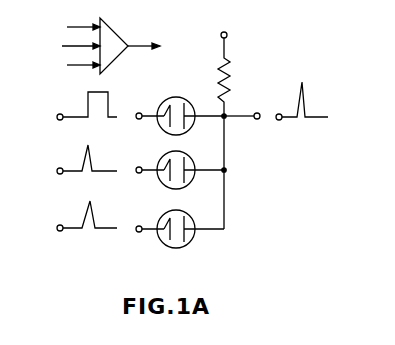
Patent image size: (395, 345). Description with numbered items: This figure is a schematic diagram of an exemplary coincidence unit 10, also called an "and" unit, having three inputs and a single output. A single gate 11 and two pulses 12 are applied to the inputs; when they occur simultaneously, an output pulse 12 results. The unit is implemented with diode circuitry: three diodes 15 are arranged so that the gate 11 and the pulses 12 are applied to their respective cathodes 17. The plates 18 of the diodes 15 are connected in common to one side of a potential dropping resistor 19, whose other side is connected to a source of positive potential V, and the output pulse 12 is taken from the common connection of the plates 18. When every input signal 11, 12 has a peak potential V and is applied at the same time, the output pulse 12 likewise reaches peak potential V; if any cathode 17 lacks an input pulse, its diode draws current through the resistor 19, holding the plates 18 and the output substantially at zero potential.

The coincidence unit 10 is at (118, 37).
The gate 11 is at (80, 26).
The pulses 12 is at (75, 44).
The diodes 15 is at (190, 100).
The cathodes 17 is at (165, 172).
The plates 18 is at (190, 171).
The potential dropping resistor 19 is at (228, 78).